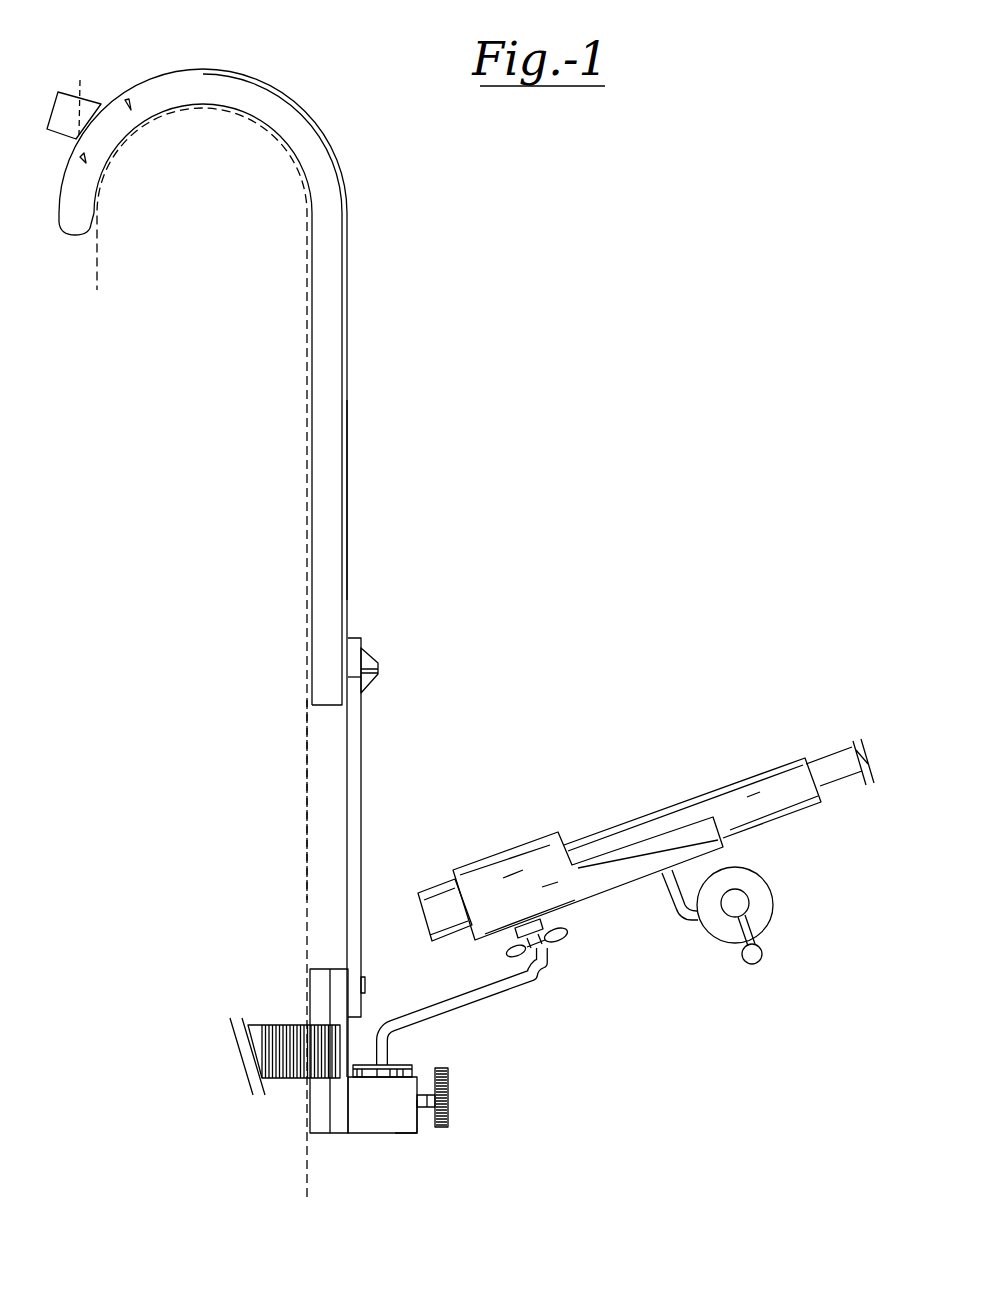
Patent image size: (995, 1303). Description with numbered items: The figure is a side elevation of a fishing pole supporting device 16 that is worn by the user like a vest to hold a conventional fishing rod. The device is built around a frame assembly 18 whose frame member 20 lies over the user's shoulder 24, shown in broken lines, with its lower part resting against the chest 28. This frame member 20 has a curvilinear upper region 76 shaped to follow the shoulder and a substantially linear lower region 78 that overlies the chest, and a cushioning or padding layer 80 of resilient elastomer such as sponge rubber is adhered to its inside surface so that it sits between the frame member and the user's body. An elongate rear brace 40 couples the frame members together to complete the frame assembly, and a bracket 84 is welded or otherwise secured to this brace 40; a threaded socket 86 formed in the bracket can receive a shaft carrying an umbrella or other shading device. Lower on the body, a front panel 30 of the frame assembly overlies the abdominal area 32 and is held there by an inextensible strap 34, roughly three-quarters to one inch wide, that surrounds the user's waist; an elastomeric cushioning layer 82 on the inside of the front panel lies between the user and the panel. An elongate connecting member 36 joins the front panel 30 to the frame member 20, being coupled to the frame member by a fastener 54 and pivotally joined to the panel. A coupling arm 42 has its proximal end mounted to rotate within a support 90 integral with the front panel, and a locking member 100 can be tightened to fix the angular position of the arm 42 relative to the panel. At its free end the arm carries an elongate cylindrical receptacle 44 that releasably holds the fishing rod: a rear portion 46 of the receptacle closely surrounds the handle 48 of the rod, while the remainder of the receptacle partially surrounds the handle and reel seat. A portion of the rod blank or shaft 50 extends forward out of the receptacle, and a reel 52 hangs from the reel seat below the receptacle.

The fishing pole supporting device 16 is at (332, 118).
The frame assembly 18 is at (364, 336).
The frame member 20 is at (347, 200).
The shoulder 24 is at (243, 113).
The chest 28 is at (306, 378).
The abdominal area 32 is at (305, 845).
The curvilinear upper region 76 is at (225, 70).
The substantially linear lower region 78 is at (348, 555).
The cushioning or padding layer 80 is at (326, 610).
The elongate rear brace 40 is at (108, 137).
The bracket 84 is at (47, 108).
The threaded socket 86 is at (80, 80).
The connecting member 36 is at (361, 797).
The fastener 54 is at (379, 656).
The elastomeric cushioning layer 82 is at (313, 1100).
The inextensible strap 34 is at (277, 1025).
The coupling arm 42 is at (473, 1012).
The front panel 30 is at (350, 1100).
The support 90 is at (410, 1133).
The locking member 100 is at (450, 1077).
The elongate cylindrical receptacle 44 is at (524, 832).
The rear portion of the receptacle 46 is at (497, 858).
The handle 48 is at (423, 912).
The rod blank or shaft 50 is at (836, 760).
The reel 52 is at (712, 940).